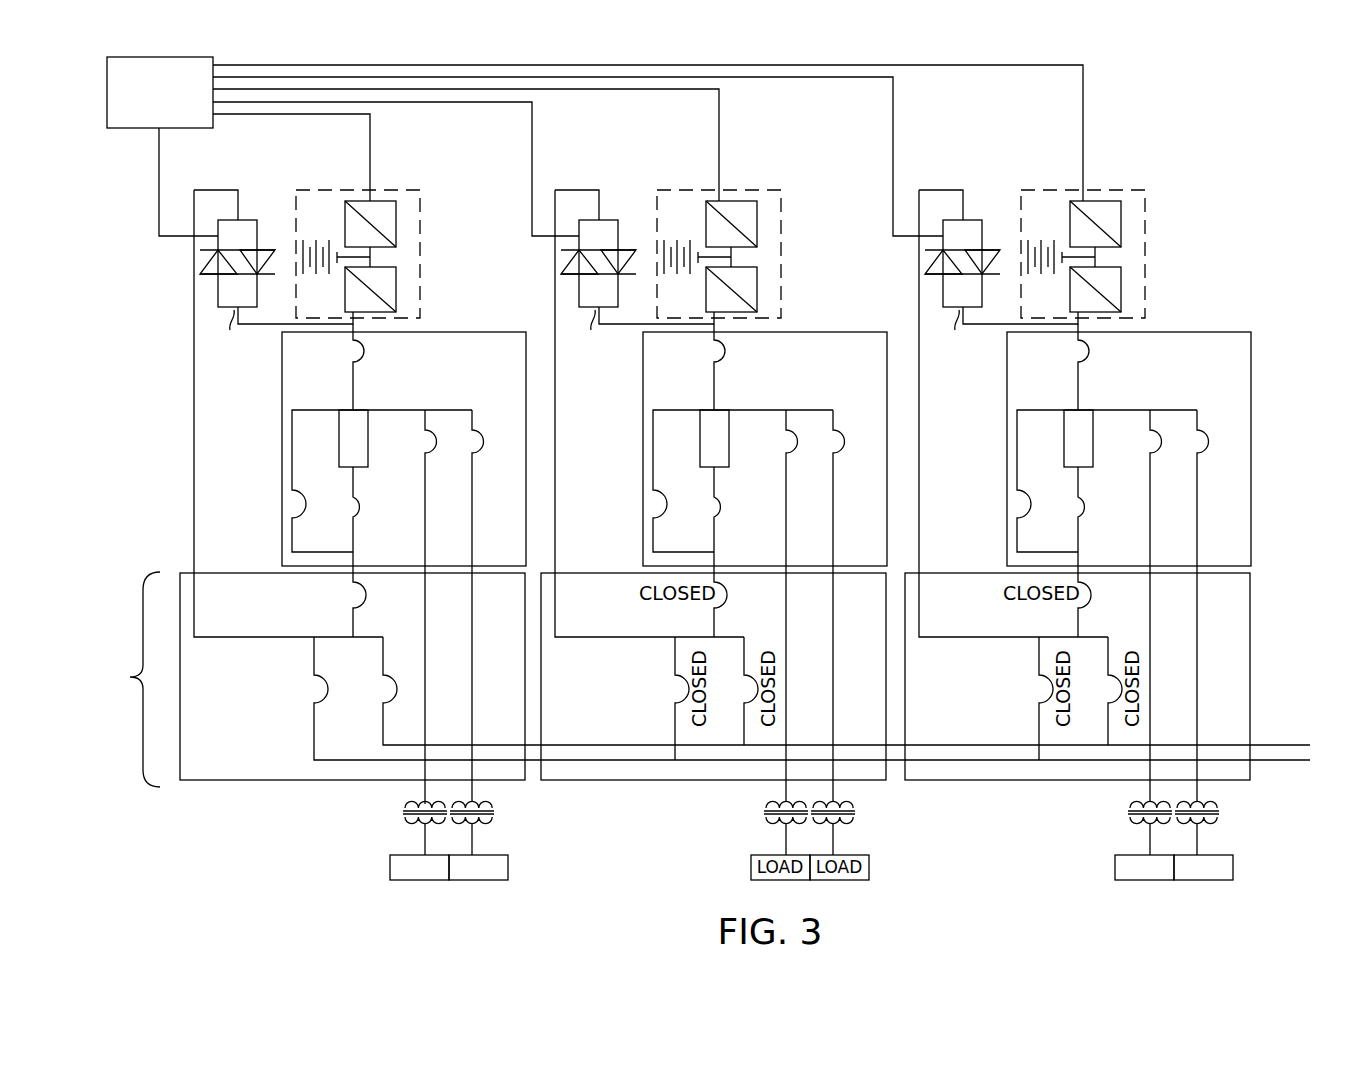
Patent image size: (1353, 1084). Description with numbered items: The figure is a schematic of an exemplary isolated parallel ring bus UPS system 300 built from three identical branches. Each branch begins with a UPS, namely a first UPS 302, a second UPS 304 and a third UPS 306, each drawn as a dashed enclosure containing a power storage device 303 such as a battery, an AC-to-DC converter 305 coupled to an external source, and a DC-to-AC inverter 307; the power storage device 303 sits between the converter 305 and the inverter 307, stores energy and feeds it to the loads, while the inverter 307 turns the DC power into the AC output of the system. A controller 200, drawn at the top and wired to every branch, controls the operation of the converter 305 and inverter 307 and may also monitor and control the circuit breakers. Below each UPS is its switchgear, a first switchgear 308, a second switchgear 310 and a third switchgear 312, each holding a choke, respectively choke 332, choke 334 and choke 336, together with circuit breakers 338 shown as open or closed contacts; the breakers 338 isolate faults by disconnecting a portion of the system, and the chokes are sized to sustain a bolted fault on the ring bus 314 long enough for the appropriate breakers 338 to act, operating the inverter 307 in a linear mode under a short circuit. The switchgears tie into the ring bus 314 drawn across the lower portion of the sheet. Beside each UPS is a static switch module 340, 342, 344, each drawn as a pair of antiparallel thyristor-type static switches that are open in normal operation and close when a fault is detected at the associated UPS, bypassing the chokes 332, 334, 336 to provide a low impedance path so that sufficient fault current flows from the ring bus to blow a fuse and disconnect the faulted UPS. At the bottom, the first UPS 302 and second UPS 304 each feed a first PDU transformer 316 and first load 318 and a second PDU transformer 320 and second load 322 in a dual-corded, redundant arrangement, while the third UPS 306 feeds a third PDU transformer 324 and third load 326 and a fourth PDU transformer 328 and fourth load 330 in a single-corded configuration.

The controller 200 is at (181, 101).
The UPS system 300 is at (1152, 132).
The first UPS 302 is at (420, 268).
The power storage device 303 is at (314, 236).
The second UPS 304 is at (766, 254).
The AC-to-DC converter 305 is at (398, 225).
The third UPS 306 is at (1130, 254).
The DC-to-AC inverter 307 is at (398, 298).
The first switchgear 308 is at (282, 376).
The second switchgear 310 is at (726, 563).
The third switchgear 312 is at (1131, 563).
The ring bus 314 is at (130, 677).
The first PDU transformer 316 is at (405, 808).
The first load 318 is at (390, 866).
The second PDU transformer 320 is at (494, 808).
The second load 322 is at (510, 866).
The third PDU transformer 324 is at (1112, 826).
The third load 326 is at (1107, 867).
The fourth PDU transformer 328 is at (1234, 826).
The fourth load 330 is at (1242, 867).
The choke 332 is at (339, 446).
The choke 334 is at (726, 601).
The choke 336 is at (1139, 601).
The circuit breakers 338 is at (1205, 606).
The static switch module 340 is at (248, 215).
The static switch module 342 is at (634, 251).
The static switch module 344 is at (998, 251).